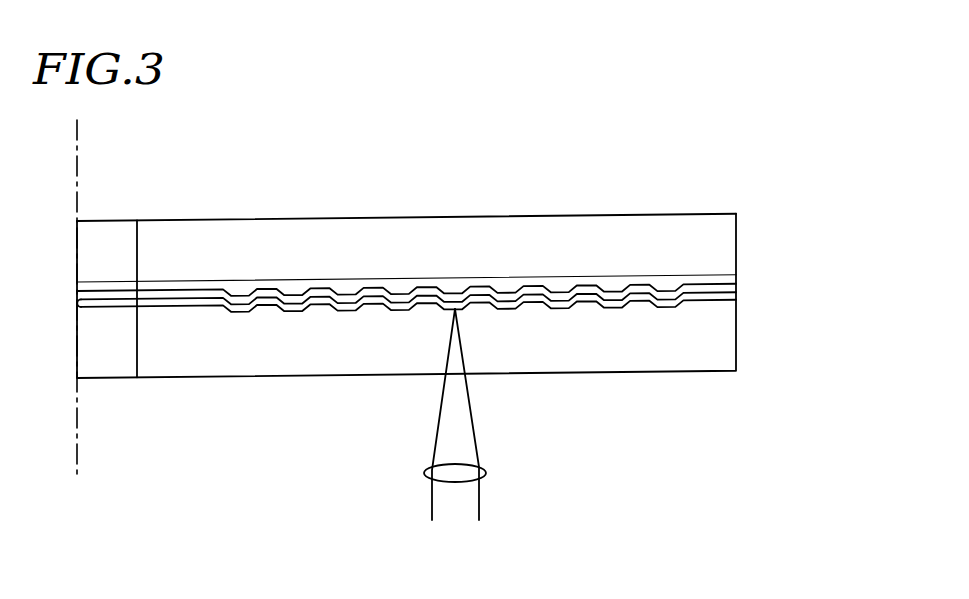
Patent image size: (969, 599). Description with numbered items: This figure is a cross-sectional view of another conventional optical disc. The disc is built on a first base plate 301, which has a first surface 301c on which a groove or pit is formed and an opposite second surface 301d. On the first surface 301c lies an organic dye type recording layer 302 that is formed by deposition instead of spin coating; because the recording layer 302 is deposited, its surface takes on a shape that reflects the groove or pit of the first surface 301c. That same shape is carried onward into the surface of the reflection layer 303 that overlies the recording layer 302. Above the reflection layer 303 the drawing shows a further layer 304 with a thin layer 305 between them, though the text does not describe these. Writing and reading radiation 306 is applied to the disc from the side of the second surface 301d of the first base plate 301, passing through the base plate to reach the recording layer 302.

The first base plate 301 is at (645, 357).
The first surface of the first base plate 301c is at (198, 306).
The second surface of the first base plate 301d is at (269, 376).
The organic dye type recording layer 302 is at (672, 305).
The reflection layer 303 is at (708, 285).
The upper layer / cover plate 304 is at (562, 232).
The interface layer 305 is at (667, 277).
The light beam / laser spot 306 is at (467, 470).